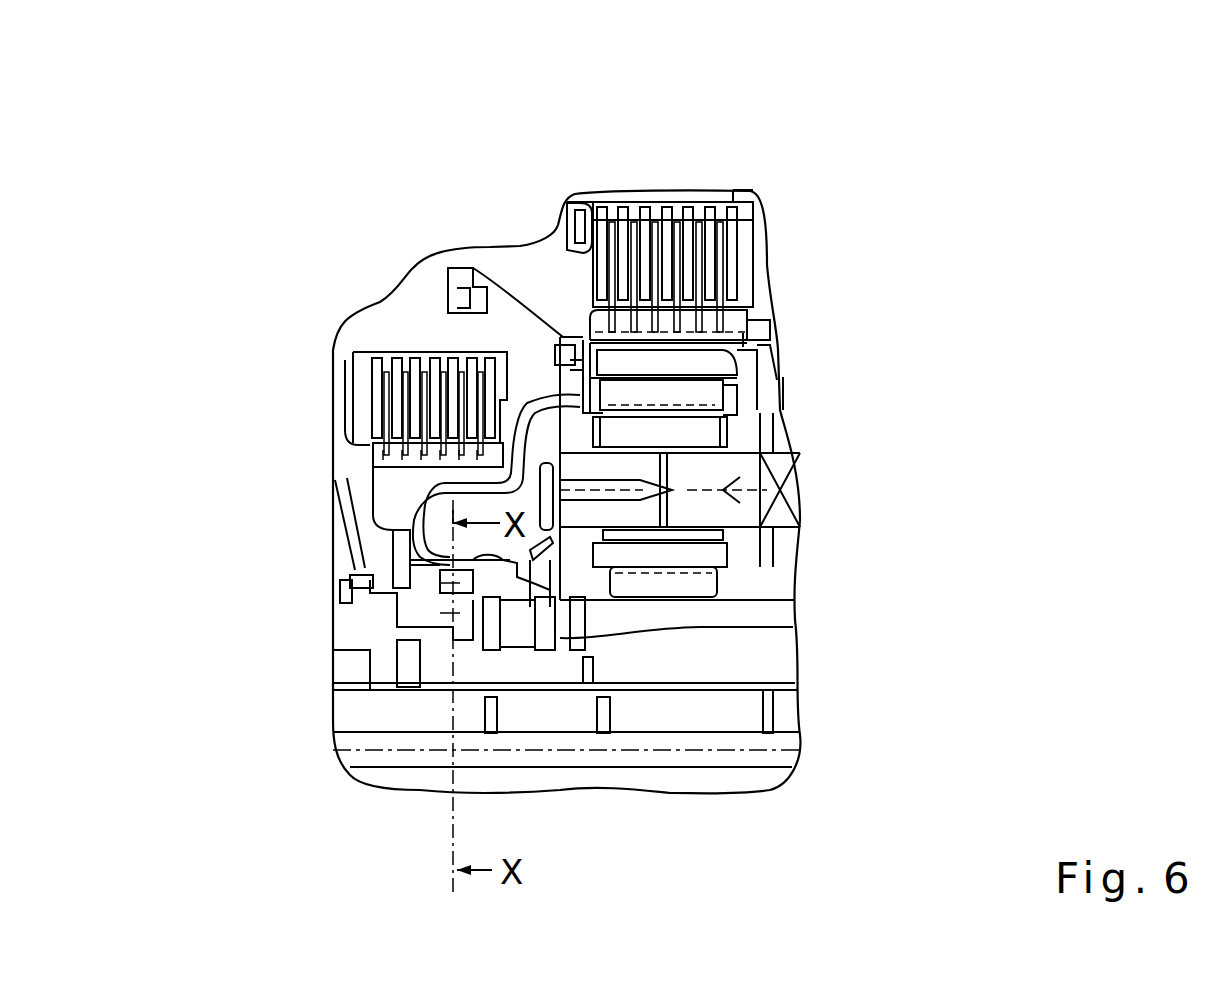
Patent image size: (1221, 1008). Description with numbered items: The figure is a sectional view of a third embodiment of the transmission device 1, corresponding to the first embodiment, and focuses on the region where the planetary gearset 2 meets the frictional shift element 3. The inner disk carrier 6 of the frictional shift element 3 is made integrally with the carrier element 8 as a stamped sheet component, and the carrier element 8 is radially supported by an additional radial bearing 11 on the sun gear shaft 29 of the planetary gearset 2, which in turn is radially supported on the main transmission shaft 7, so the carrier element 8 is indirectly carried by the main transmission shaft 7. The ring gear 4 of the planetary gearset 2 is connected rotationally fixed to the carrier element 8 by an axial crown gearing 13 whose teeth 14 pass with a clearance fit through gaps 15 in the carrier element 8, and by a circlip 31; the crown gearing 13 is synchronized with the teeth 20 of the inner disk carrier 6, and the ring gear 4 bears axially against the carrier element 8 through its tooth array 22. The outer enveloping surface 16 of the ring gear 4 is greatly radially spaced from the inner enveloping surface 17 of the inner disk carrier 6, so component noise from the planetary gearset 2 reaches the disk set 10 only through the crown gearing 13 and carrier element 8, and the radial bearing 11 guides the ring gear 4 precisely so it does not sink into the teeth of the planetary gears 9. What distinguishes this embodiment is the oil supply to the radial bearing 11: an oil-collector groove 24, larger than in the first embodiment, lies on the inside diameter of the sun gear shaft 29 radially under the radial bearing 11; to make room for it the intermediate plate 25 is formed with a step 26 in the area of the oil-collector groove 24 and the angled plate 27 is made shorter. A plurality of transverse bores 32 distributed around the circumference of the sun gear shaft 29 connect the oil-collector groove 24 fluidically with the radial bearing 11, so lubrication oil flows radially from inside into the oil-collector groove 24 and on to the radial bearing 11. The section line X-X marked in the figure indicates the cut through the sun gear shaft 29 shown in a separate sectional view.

The transmission device 1 is at (276, 175).
The planetary gearset 2 is at (757, 353).
The frictional shift element 3 is at (740, 350).
The ring gear 4 is at (693, 362).
The inner disk carrier 6 is at (653, 347).
The main transmission shaft 7 is at (790, 713).
The carrier element 8 is at (447, 490).
The planetary gears 9 is at (697, 427).
The disk set 10 is at (730, 337).
The radial bearing 11 is at (445, 577).
The axial crown gearing 13 is at (567, 337).
The teeth 14 is at (473, 268).
The gaps 15 is at (653, 347).
The outer enveloping surface 16 is at (745, 325).
The inner enveloping surface 17 is at (745, 491).
The teeth of the inner disk carrier 20 is at (760, 247).
The tooth array 22 is at (730, 393).
The oil-collector groove 24 is at (445, 622).
The intermediate plate 25 is at (433, 600).
The step 26 is at (440, 595).
The angled plate 27 is at (360, 648).
The sun gear shaft 29 is at (637, 677).
The circlip 31 is at (563, 360).
The transverse bores 32 is at (432, 552).